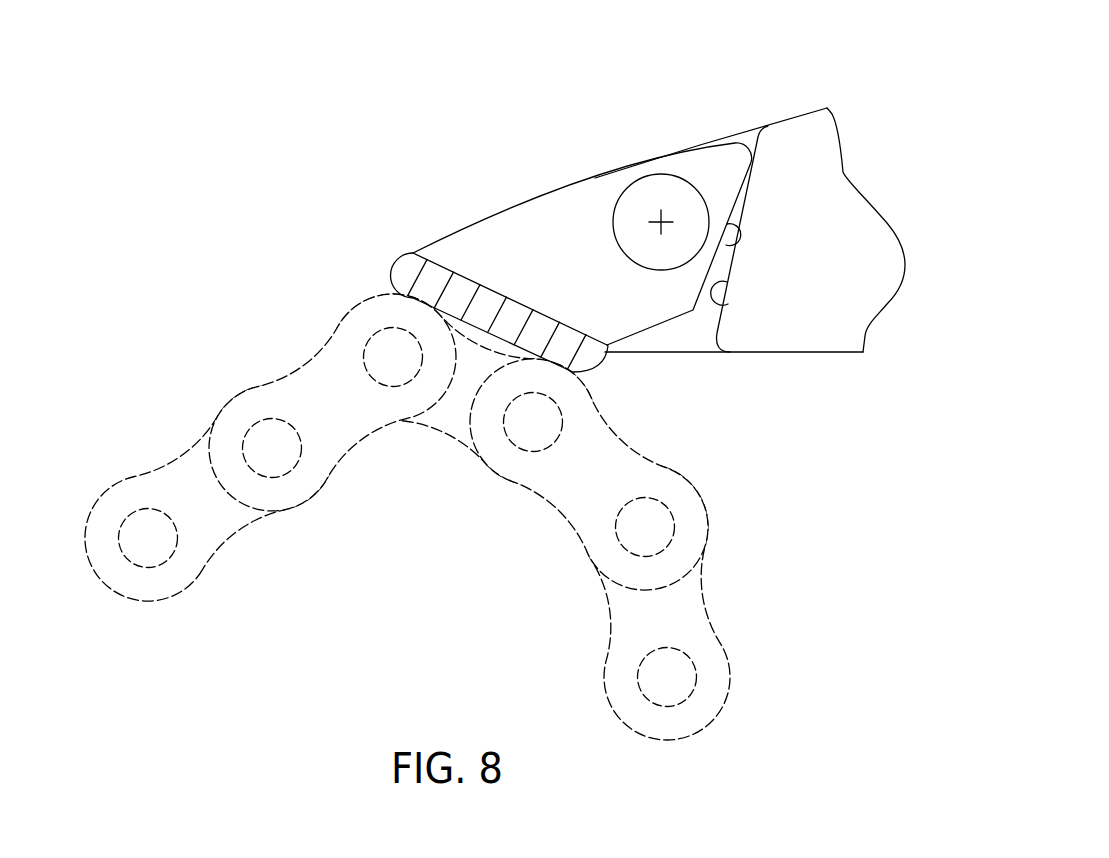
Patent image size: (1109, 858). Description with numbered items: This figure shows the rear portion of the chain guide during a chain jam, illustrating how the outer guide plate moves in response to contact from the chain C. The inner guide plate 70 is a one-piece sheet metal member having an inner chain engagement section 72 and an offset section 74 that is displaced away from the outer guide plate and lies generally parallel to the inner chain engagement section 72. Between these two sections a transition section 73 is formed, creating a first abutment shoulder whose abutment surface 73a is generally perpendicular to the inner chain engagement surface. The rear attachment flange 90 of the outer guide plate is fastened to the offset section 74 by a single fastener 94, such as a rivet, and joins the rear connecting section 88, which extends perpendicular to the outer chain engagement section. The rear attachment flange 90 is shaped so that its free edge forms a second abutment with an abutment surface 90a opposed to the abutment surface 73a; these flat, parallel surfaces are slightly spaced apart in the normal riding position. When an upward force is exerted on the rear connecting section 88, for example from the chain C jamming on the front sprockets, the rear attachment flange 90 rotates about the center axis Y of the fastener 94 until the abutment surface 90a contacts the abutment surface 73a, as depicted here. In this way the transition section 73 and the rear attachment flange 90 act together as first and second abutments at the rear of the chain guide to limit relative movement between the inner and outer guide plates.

The inner guide plate 70 is at (768, 225).
The inner chain engagement section 72 is at (857, 245).
The transition section 73 is at (765, 157).
The abutment surface 73a is at (720, 309).
The offset section 74 is at (688, 335).
The rear connecting section 88 is at (427, 283).
The rear attachment flange 90 is at (550, 243).
The abutment surface 90a is at (740, 222).
The fastener 94 is at (670, 195).
The center axis Y is at (660, 221).
The chain C is at (318, 493).